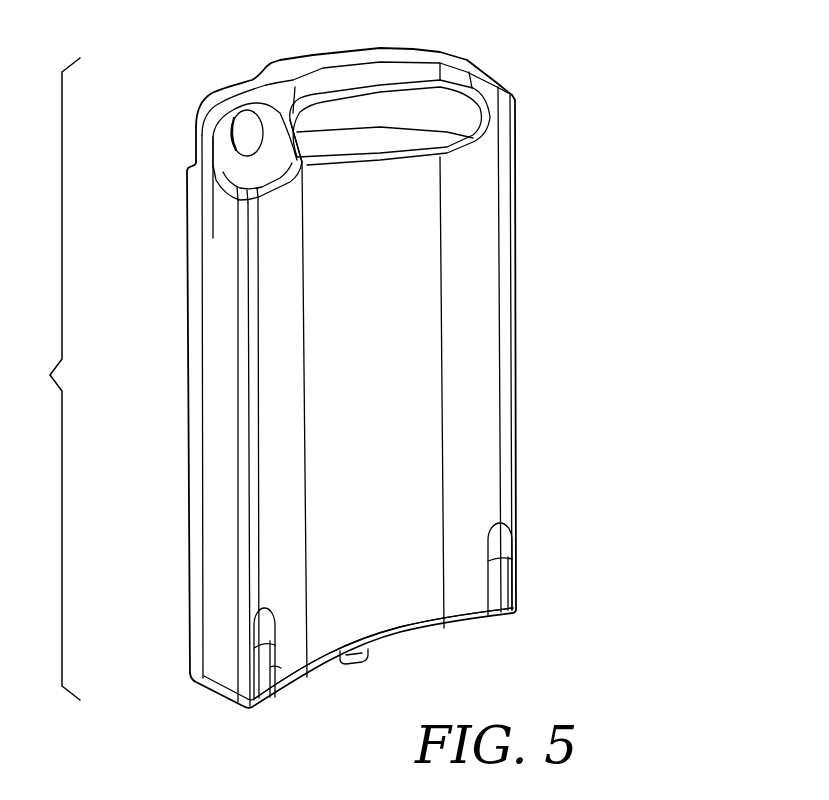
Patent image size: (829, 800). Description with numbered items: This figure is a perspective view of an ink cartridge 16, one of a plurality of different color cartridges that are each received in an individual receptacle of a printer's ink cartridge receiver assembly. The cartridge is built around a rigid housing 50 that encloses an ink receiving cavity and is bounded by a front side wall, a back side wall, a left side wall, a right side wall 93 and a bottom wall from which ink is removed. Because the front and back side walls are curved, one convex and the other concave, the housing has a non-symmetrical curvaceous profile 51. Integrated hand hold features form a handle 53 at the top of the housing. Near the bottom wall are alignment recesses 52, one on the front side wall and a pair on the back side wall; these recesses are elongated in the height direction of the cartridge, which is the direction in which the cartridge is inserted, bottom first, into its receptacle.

The ink cartridge 16 is at (45, 379).
The housing 50 is at (468, 305).
The non-symmetrical curvaceous profile 51 is at (420, 637).
The alignment recesses 52 is at (500, 543).
The handle 53 is at (337, 115).
The right side wall 93 is at (218, 556).